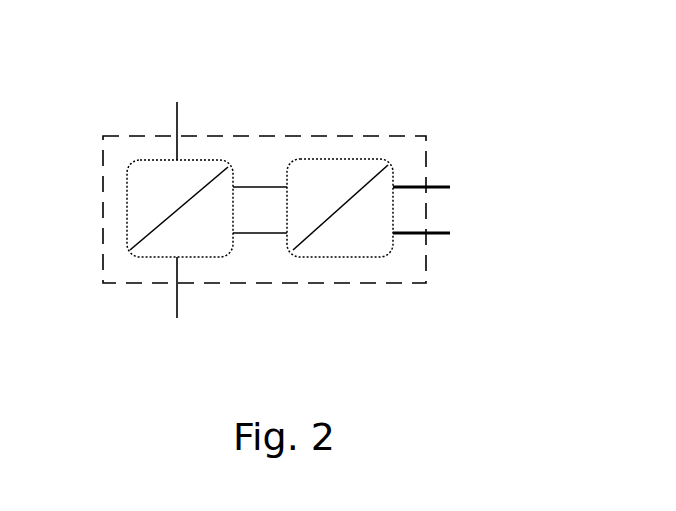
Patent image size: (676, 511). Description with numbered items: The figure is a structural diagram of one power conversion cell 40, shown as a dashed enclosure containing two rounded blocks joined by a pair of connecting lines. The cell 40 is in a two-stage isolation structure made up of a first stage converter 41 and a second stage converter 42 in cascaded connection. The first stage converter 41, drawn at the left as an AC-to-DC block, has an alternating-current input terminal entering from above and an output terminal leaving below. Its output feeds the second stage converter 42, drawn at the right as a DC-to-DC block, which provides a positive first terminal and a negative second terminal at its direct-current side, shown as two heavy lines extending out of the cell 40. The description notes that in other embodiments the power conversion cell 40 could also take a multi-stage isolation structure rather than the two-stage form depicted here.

The power conversion cell 40 is at (347, 122).
The first stage converter 41 is at (146, 145).
The second stage converter 42 is at (368, 268).